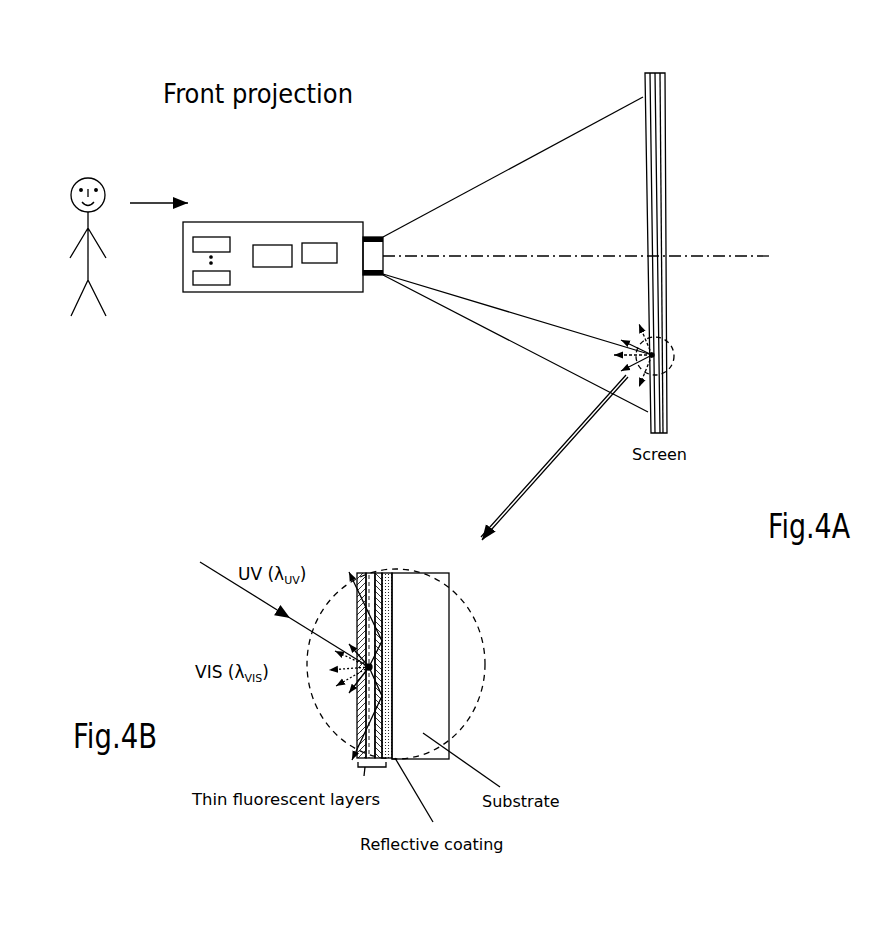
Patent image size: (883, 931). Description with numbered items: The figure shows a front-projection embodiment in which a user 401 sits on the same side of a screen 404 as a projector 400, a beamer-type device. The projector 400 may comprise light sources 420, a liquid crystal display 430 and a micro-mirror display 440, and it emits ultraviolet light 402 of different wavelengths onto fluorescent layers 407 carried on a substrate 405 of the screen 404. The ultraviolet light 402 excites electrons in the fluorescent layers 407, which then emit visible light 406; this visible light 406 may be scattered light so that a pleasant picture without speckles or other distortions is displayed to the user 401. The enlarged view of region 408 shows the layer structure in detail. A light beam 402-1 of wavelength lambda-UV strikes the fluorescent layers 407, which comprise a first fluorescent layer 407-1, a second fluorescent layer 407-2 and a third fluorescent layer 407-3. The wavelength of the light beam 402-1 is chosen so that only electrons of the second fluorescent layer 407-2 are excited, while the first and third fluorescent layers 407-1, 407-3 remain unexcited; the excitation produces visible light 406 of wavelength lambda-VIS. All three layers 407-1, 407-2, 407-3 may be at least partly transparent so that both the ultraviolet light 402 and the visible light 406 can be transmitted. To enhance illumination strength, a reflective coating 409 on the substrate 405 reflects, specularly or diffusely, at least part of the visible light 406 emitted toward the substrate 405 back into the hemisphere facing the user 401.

In FIG. 4A, the projector 400 is at (227, 222).
In FIG. 4A, the user 401 is at (70, 172).
In FIG. 4A, the ultraviolet light 402 is at (504, 170).
In FIG. 4B, the light beam 402-1 is at (216, 560).
In FIG. 4A, the screen 404 is at (665, 62).
In FIG. 4A, the substrate 405 is at (664, 135).
In FIG. 4B, the substrate 405 is at (440, 627).
In FIG. 4A, the visible light 406 is at (610, 318).
In FIG. 4B, the visible light 406 is at (353, 572).
In FIG. 4A, the fluorescent layers 407 is at (645, 85).
In FIG. 4B, the first fluorescent layer 407-1 is at (361, 573).
In FIG. 4B, the second fluorescent layer 407-2 is at (371, 573).
In FIG. 4B, the third fluorescent layer 407-3 is at (379, 573).
In FIG. 4A, the region 408 is at (668, 336).
In FIG. 4B, the region 408 is at (485, 675).
In FIG. 4B, the reflective coating 409 is at (387, 573).
In FIG. 4A, the light sources 420 is at (193, 243).
In FIG. 4A, the liquid crystal display 430 is at (318, 263).
In FIG. 4A, the micro-mirror display 440 is at (265, 245).